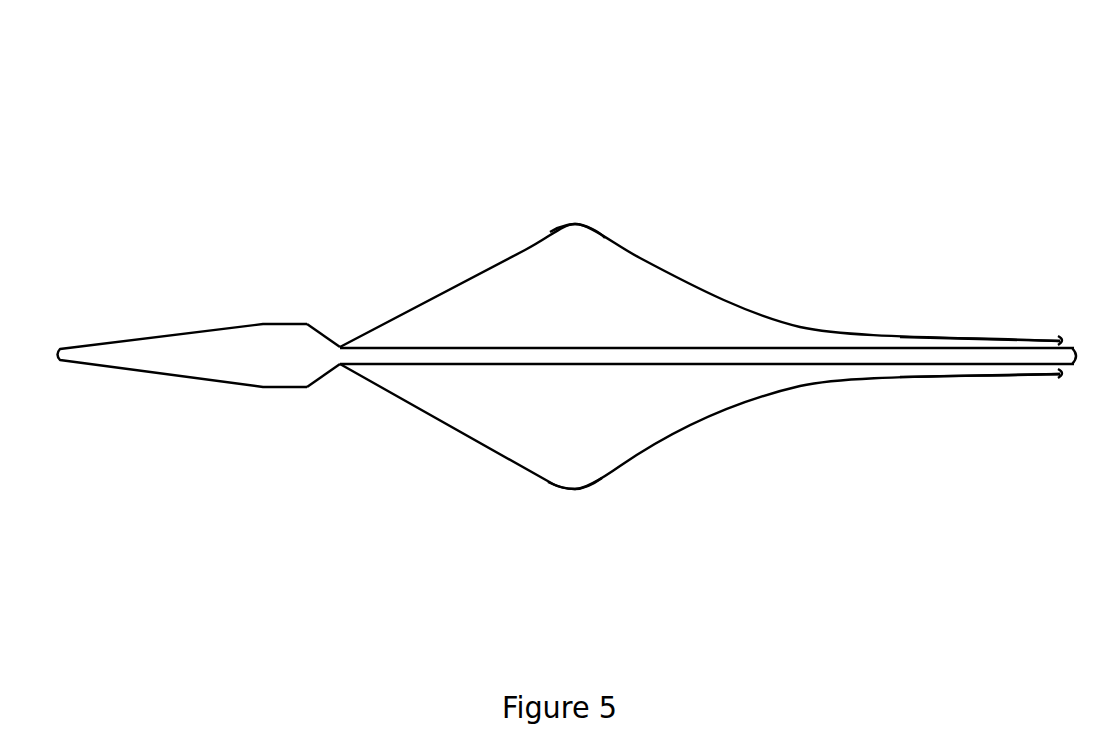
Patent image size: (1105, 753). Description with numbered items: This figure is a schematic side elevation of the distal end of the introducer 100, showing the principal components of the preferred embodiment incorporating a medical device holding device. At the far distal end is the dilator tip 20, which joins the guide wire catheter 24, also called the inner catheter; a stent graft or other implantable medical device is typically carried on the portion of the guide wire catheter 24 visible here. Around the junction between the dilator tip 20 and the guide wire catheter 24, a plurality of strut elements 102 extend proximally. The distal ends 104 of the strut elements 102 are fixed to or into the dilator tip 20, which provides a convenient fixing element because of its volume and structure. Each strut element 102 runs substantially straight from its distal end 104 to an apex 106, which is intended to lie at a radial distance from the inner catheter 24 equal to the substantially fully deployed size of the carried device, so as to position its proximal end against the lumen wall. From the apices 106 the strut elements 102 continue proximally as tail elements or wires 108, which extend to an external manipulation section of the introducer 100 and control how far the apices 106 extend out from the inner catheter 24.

The introducer 100 is at (340, 122).
The dilator tip 20 is at (180, 365).
The guide wire catheter 24 is at (908, 355).
The strut elements 102 is at (680, 265).
The distal ends 104 is at (340, 345).
The apex 106 is at (555, 222).
The tail elements or wires 108 is at (993, 338).